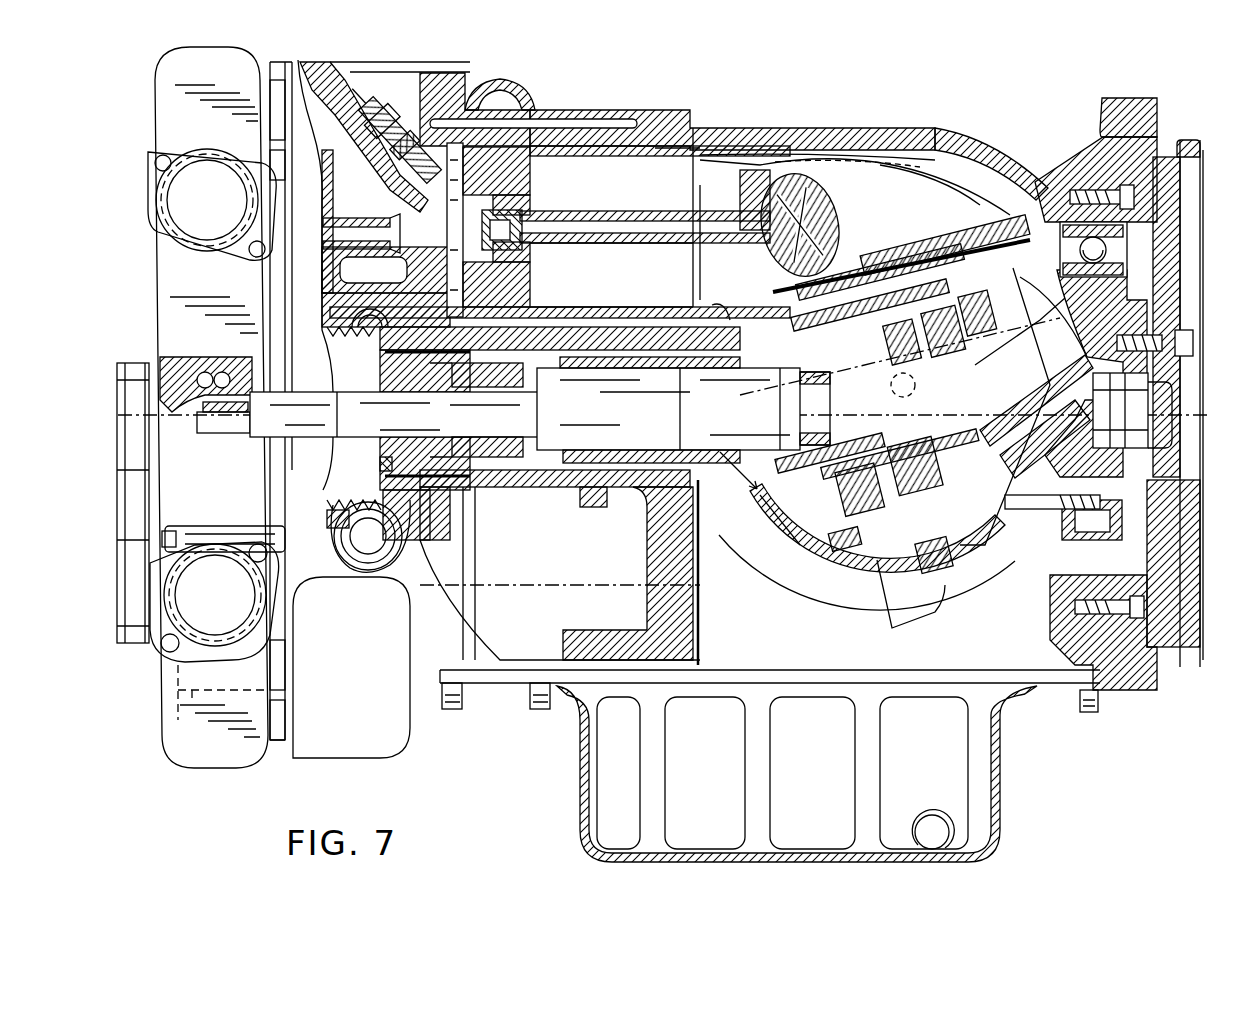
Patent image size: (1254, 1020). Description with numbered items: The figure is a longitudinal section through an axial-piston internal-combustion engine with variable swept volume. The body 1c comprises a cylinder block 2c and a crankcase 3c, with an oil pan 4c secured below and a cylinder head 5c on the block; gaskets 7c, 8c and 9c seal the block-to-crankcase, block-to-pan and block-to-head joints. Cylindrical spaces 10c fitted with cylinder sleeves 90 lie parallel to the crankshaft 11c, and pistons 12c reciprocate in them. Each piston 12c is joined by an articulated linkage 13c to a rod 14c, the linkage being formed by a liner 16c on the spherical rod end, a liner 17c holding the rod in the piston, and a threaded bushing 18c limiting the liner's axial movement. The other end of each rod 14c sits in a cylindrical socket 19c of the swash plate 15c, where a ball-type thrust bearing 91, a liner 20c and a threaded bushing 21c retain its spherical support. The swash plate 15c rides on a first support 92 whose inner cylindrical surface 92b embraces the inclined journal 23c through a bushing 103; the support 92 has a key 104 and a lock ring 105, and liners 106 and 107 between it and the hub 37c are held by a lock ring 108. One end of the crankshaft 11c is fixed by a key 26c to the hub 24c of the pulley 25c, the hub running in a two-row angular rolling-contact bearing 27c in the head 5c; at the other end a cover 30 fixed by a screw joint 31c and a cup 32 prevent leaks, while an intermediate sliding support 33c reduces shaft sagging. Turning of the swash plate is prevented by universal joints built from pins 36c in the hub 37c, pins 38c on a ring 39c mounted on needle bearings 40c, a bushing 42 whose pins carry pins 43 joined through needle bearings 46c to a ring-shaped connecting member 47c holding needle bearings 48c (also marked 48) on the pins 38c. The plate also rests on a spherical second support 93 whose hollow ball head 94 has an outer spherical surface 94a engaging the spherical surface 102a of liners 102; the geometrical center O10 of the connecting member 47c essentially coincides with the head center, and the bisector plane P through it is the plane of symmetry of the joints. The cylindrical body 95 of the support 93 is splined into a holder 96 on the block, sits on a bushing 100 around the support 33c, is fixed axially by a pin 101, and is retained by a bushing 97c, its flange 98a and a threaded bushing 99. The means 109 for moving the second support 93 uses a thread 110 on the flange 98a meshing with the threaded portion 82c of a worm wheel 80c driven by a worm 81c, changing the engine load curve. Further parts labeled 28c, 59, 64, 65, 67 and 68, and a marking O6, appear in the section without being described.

The body 1c is at (496, 80).
The cylinder block 2c is at (640, 110).
The crankcase 3c is at (812, 130).
The oil pan 4c is at (1001, 800).
The cylinder head 5c is at (155, 332).
The gasket 7c is at (693, 128).
The gasket 8c is at (1052, 690).
The gasket 9c is at (292, 675).
The cylindrical spaces 10c is at (695, 165).
The crankshaft 11c is at (625, 405).
The pistons 12c is at (553, 165).
The articulated linkage 13c is at (597, 204).
The rod 14c is at (611, 275).
The swash plate 15c is at (906, 214).
The liner 16c is at (503, 172).
The liner 17c is at (562, 254).
The threaded bushing 18c is at (563, 268).
The cylindrical socket 19c is at (783, 152).
The liner 20c is at (748, 185).
The threaded bushing 21c is at (700, 194).
The inclined journal 23c is at (1042, 325).
The hub 24c is at (205, 410).
The pulley 25c is at (118, 400).
The key 26c is at (230, 433).
The two-row angular rolling-contact bearing 27c is at (193, 370).
The end flange 28c is at (1045, 190).
The cover 30 is at (1127, 228).
The screw joint 31c is at (1135, 191).
The cup 32 is at (1145, 330).
The intermediate sliding support 33c is at (712, 305).
The pins 36c is at (777, 508).
The hub 37c is at (934, 246).
The pins 38c is at (932, 510).
The ring 39c is at (937, 453).
The needle bearings 40c is at (933, 498).
The bushing 42 is at (808, 367).
The pins 43 is at (780, 428).
The needle bearings 46c is at (746, 320).
The connecting member 47c is at (838, 555).
The needle bearings 48 is at (862, 497).
The needle bearings 48c is at (850, 239).
The oil channel 59 is at (596, 119).
The spring assembly 64 is at (380, 112).
The housing wall 65 is at (392, 198).
The end plate 67 is at (1203, 592).
The end cover 68 is at (1200, 155).
The worm wheel 80c is at (345, 520).
The worm 81c is at (373, 570).
The threaded portion 82c is at (337, 533).
The cylinder sleeves 90 is at (660, 147).
The ball-type thrust bearing 91 is at (810, 195).
The first support 92 is at (983, 252).
The inner cylindrical surface 92b is at (985, 326).
The second support 93 is at (745, 553).
The hollow ball head 94 is at (813, 533).
The outer spherical surface 94a is at (875, 555).
The cylindrical body 95 is at (600, 515).
The holder 96 is at (625, 495).
The bushing 97c is at (382, 464).
The flange 98a is at (380, 488).
The threaded bushing 99 is at (445, 437).
The bushing 100 is at (670, 405).
The pin 101 is at (556, 376).
The liners 102 is at (928, 596).
The spherical surface 102a is at (810, 586).
The bushing 103 is at (960, 307).
The key 104 is at (977, 312).
The lock ring 105 is at (920, 318).
The liner 106 is at (948, 246).
The liner 107 is at (1068, 290).
The lock ring 108 is at (1017, 262).
The means for moving the second support 109 is at (459, 536).
The thread 110 is at (465, 503).
The axis O6 is at (902, 346).
The geometrical center of connecting member O10 is at (876, 390).
The bisector surface P is at (884, 515).